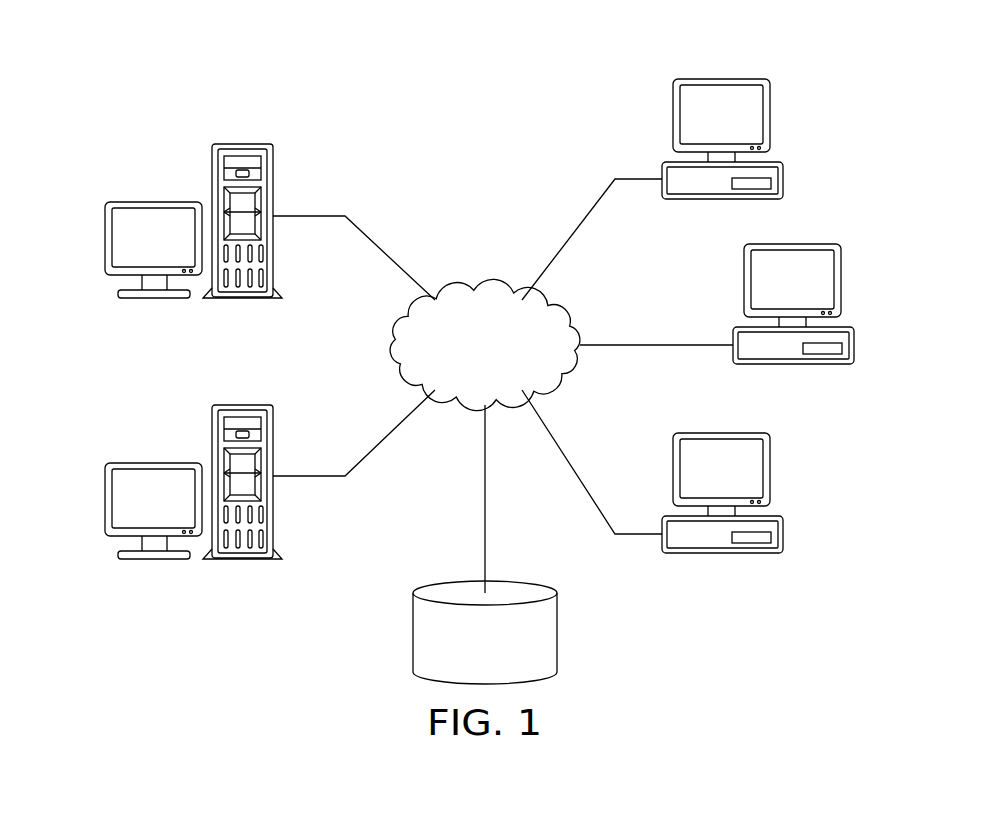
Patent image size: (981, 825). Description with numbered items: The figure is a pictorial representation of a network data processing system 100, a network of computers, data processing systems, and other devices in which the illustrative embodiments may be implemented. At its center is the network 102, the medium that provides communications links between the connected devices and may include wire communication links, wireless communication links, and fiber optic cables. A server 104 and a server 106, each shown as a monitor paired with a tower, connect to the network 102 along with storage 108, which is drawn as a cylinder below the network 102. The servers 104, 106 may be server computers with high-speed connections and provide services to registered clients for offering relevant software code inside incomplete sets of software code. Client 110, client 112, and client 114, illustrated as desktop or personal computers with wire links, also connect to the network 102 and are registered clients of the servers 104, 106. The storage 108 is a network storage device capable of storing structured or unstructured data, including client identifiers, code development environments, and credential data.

The network data processing system 100 is at (398, 71).
The network 102 is at (458, 290).
The server 104 is at (105, 240).
The server 106 is at (106, 497).
The storage 108 is at (413, 628).
The client 110 is at (770, 115).
The client 112 is at (842, 282).
The client 114 is at (770, 470).